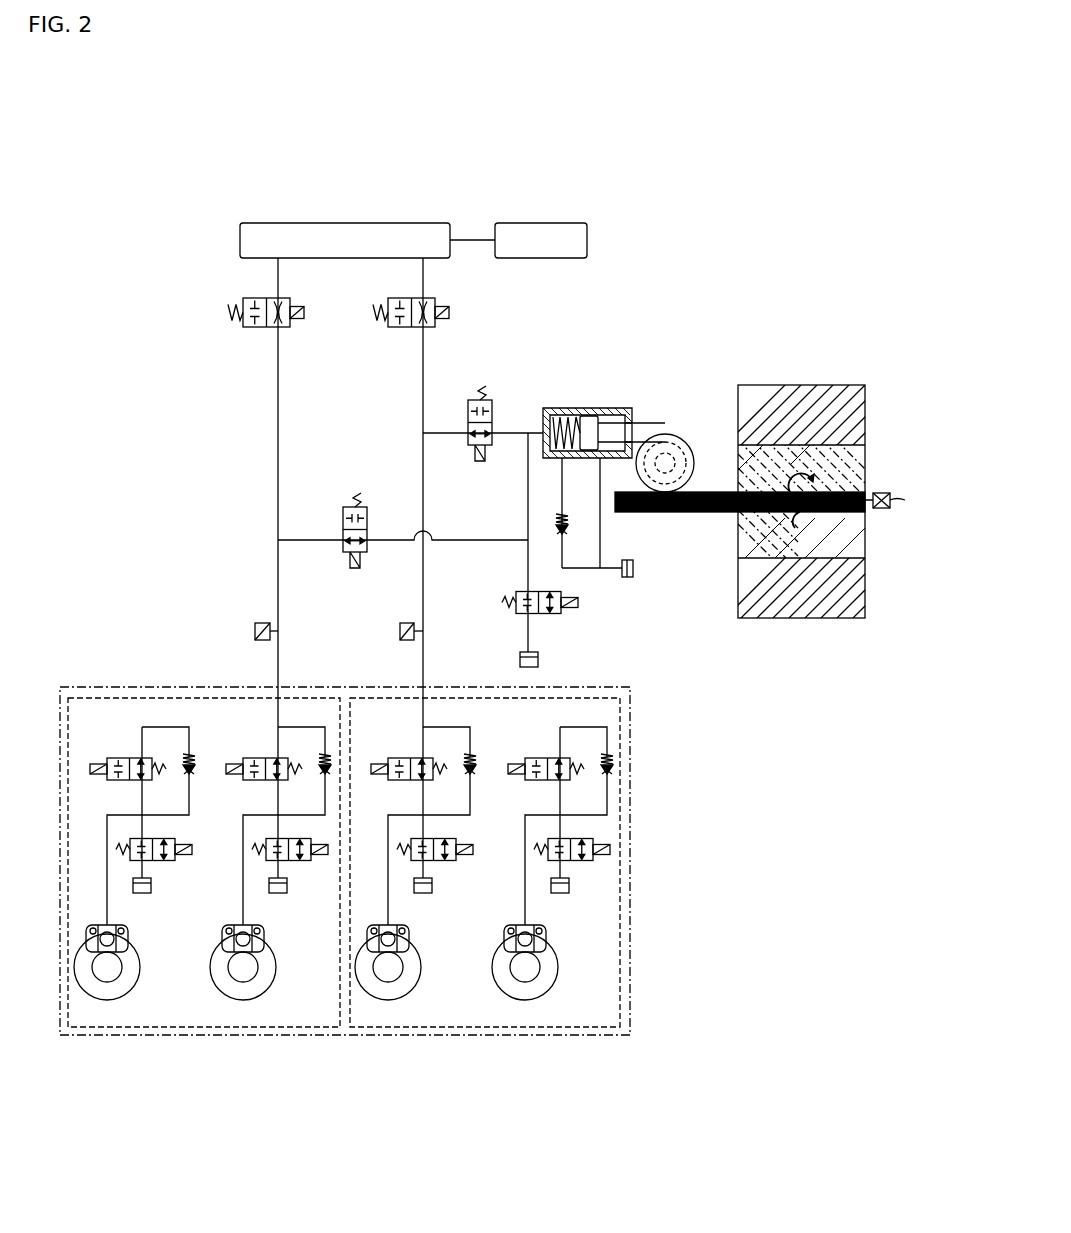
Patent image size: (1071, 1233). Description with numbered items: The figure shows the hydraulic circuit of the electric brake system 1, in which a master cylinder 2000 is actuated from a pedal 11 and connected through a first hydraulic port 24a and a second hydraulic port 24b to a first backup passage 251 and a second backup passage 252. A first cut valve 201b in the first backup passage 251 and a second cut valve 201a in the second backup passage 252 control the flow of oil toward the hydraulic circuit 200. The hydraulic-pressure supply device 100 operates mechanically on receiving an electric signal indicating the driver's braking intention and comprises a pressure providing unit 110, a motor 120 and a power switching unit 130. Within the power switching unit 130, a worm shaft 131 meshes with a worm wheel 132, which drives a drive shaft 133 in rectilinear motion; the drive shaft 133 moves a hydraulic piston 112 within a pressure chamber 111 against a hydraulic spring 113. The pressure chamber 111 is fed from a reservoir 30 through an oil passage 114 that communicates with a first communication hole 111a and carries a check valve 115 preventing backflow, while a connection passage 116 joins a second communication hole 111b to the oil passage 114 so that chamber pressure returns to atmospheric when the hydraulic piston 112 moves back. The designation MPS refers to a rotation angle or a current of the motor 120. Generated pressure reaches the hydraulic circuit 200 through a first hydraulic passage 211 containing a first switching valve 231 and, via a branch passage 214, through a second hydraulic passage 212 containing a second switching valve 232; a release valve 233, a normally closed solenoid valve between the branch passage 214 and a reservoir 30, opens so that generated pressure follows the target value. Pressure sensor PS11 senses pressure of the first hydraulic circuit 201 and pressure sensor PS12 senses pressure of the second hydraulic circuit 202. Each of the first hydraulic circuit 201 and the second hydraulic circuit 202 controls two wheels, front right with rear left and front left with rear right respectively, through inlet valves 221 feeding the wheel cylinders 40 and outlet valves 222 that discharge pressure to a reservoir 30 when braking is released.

The electric brake system 1 is at (443, 122).
The master cylinder 2000 is at (427, 223).
The pedal 11 is at (562, 223).
The first hydraulic port 24a is at (426, 260).
The second hydraulic port 24b is at (274, 260).
The second cut valve 201a is at (304, 313).
The first cut valve 201b is at (449, 313).
The first backup passage 251 is at (423, 371).
The second backup passage 252 is at (278, 371).
The first hydraulic passage 211 is at (431, 432).
The second hydraulic passage 212 is at (472, 541).
The branch passage 214 is at (528, 500).
The first switching valve 231 is at (494, 400).
The second switching valve 232 is at (343, 506).
The release valve 233 is at (560, 616).
The first hydraulic passage pressure sensor PS11 is at (400, 632).
The second hydraulic passage pressure sensor PS12 is at (255, 628).
The hydraulic-pressure supply device 100 is at (830, 342).
The pressure providing unit 110 is at (602, 418).
The pressure chamber 111 is at (622, 407).
The first communication hole 111a is at (560, 459).
The second communication hole 111b is at (603, 459).
The hydraulic piston 112 is at (583, 459).
The hydraulic spring 113 is at (555, 407).
The oil passage 114 is at (580, 570).
The check valve 115 is at (556, 540).
The connection passage 116 is at (600, 537).
The motor 120 is at (872, 381).
The power switching unit 130 is at (740, 488).
The worm shaft 131 is at (703, 513).
The worm wheel 132 is at (672, 432).
The drive shaft 133 is at (640, 428).
The motor rotation angle or current MPS is at (905, 502).
The reservoir 30 is at (637, 568).
The wheel cylinder 40 is at (129, 940).
The hydraulic circuit 200 is at (345, 830).
The first hydraulic circuit 201 is at (485, 890).
The second hydraulic circuit 202 is at (297, 1028).
The inlet valve 221 is at (148, 781).
The outlet valve 222 is at (168, 862).